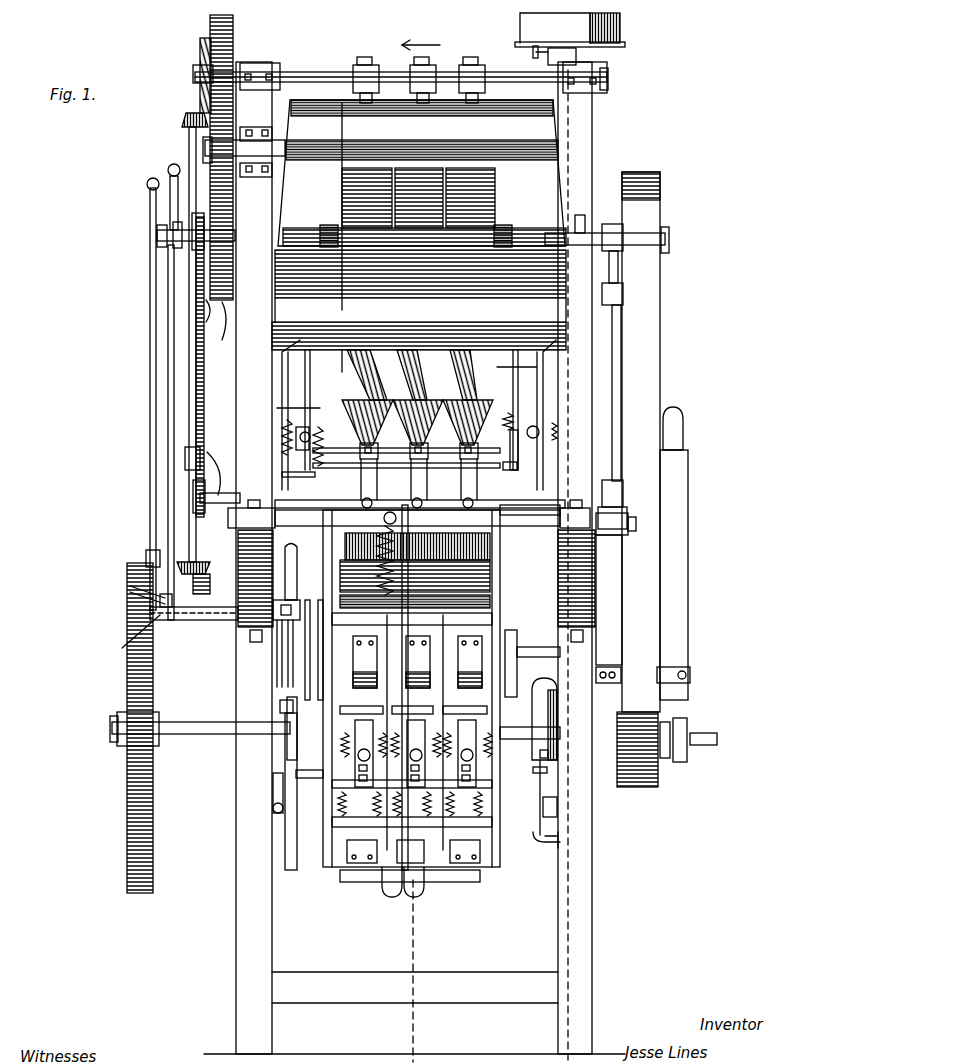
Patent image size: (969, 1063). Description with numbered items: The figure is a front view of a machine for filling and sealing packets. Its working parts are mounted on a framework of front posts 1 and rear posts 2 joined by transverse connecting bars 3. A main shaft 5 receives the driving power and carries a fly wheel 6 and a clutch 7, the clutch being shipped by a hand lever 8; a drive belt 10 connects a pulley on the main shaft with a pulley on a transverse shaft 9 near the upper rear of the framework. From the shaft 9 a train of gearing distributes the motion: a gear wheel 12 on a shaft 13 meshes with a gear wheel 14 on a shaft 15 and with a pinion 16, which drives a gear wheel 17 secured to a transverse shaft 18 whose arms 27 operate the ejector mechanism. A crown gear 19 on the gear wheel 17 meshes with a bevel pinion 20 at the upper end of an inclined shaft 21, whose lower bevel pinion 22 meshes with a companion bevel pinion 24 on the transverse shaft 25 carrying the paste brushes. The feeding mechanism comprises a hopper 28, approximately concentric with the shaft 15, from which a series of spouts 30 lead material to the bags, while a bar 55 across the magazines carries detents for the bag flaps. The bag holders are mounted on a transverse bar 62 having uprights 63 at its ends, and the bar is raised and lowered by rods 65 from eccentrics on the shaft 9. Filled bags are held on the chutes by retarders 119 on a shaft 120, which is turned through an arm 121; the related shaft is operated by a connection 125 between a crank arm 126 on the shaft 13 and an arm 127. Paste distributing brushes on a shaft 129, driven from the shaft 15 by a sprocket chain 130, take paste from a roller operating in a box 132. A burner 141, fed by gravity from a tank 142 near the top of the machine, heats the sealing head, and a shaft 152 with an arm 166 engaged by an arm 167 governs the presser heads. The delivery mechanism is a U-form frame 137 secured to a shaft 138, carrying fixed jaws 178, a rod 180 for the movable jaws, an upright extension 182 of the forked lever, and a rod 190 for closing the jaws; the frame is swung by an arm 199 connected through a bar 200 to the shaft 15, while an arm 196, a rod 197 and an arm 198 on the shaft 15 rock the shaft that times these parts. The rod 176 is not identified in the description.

The front posts 1 is at (236, 939).
The rear posts 2 is at (421, 30).
The connecting bars 3 is at (303, 1014).
The main shaft 5 is at (712, 746).
The fly wheel 6 is at (127, 888).
The clutch 7 is at (660, 755).
The hand lever 8 is at (688, 608).
The transverse shaft 9 is at (670, 240).
The drive belt 10 is at (660, 292).
The gear wheel 12 is at (217, 316).
The shaft 13 is at (166, 246).
The gear wheel 14 is at (221, 332).
The shaft 15 is at (157, 236).
The pinion 16 is at (205, 146).
The gear wheel 17 is at (234, 20).
The transverse shaft 18 is at (498, 84).
The crown gear 19 is at (202, 46).
The bevel pinion 20 is at (190, 114).
The shaft 21 is at (190, 303).
The bevel pinion 22 is at (200, 562).
The bevel pinion 24 is at (206, 620).
The transverse shaft 25 is at (222, 578).
The arms 27 is at (262, 64).
The hopper 28 is at (312, 100).
The spouts 30 is at (412, 392).
The bar 55 is at (362, 415).
The transverse bar 62 is at (346, 446).
The uprights 63 is at (298, 458).
The rods 65 is at (305, 370).
The retarders 119 is at (420, 658).
The shaft 120 is at (362, 668).
The arm 121 is at (615, 262).
The connection 125 is at (150, 376).
The crank arm 126 is at (170, 212).
The arm 127 is at (130, 589).
The shaft 129 is at (214, 475).
The sprocket chain 130 is at (204, 370).
The paste box 132 is at (480, 570).
The frame 137 is at (510, 835).
The shaft 138 is at (636, 522).
The burner 141 is at (312, 755).
The tank 142 is at (600, 18).
The shaft 152 is at (312, 800).
The arm 166 is at (275, 750).
The arm 167 is at (276, 684).
The rod 176 is at (400, 815).
The jaws 178 is at (480, 874).
The rod 180 is at (430, 890).
The upright extension 182 is at (420, 838).
The rod 190 is at (372, 805).
The arm 196 is at (122, 648).
The rod 197 is at (168, 328).
The arm 198 is at (148, 188).
The arm 199 is at (618, 506).
The bar 200 is at (621, 352).